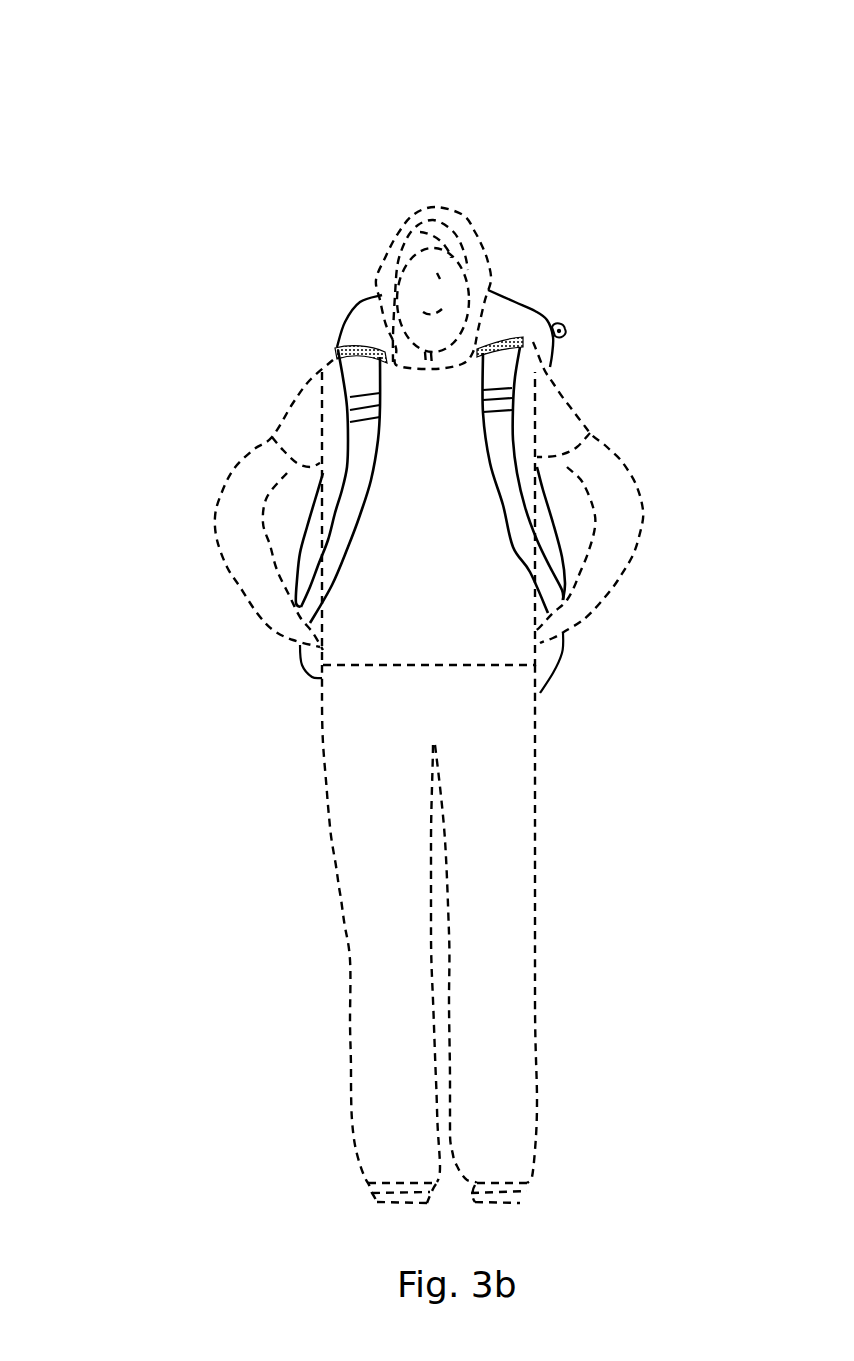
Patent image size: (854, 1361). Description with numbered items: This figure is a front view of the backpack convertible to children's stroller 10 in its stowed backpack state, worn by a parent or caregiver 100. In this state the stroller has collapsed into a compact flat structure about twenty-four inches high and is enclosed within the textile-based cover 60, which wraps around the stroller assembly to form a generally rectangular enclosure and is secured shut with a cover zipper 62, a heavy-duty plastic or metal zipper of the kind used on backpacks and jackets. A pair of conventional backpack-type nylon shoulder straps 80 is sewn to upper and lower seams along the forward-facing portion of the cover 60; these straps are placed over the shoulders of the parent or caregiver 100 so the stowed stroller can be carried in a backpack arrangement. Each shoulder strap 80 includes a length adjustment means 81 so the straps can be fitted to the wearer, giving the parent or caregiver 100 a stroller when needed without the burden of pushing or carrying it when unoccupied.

The backpack convertible to children's stroller 10 is at (133, 150).
The parent or caregiver 100 is at (468, 223).
The cover 60 is at (528, 333).
The cover zipper 62 is at (566, 332).
The shoulder straps 80 is at (330, 563).
The length adjustment means 81 is at (350, 420).